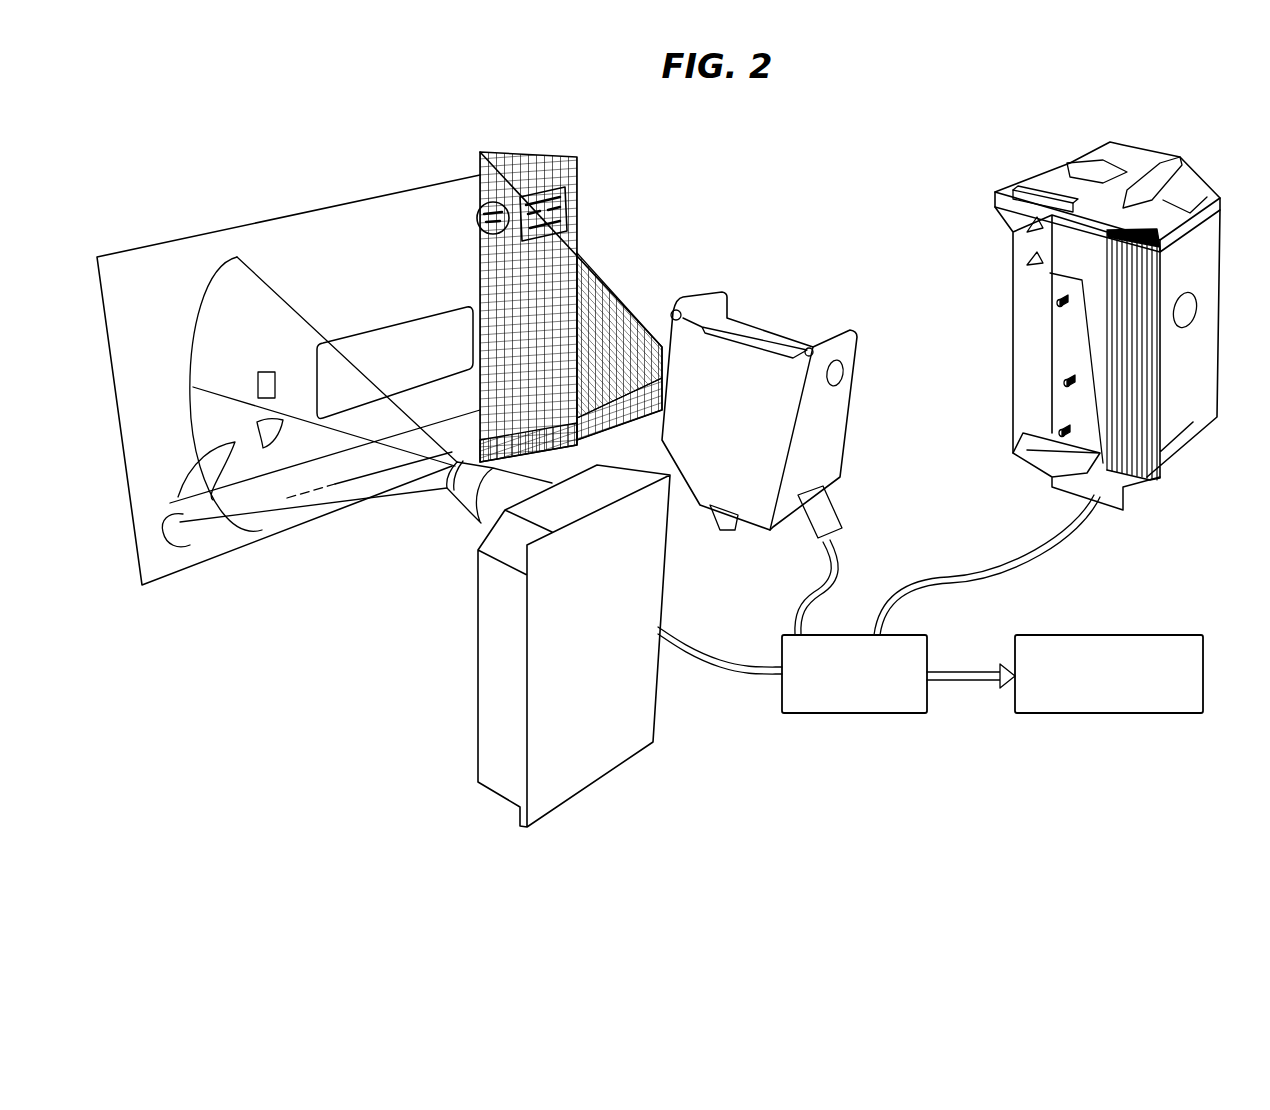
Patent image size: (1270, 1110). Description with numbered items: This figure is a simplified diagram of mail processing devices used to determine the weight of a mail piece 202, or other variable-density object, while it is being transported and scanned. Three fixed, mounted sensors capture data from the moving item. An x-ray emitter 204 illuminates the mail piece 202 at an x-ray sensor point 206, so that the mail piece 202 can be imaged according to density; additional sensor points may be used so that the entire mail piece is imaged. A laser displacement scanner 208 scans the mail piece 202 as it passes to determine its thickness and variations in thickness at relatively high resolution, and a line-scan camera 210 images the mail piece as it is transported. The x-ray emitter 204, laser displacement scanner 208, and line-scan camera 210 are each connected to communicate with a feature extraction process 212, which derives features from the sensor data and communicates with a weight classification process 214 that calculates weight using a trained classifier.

The mail piece 202 is at (228, 552).
The x-ray emitter 204 is at (632, 755).
The x-ray sensor point 206 is at (243, 377).
The laser displacement scanner 208 is at (780, 328).
The line-scan camera 210 is at (1032, 176).
The feature extraction process 212 is at (897, 714).
The weight classification process 214 is at (1078, 714).